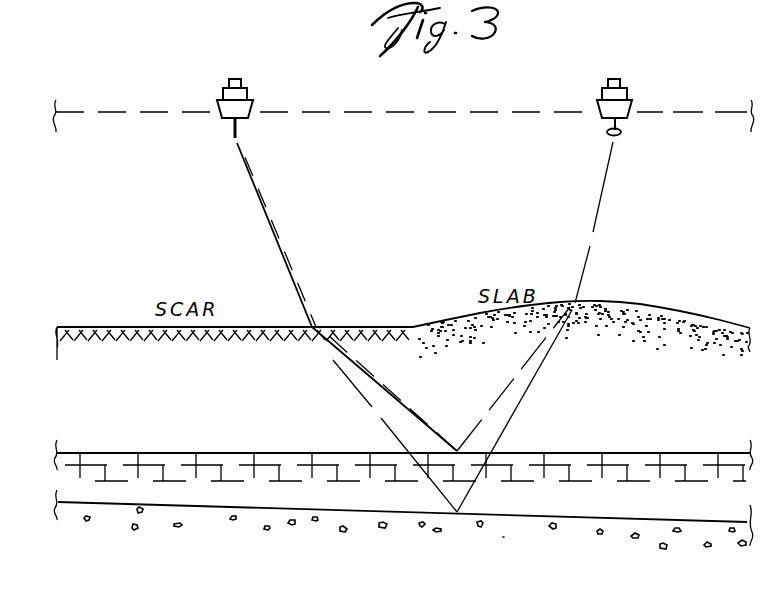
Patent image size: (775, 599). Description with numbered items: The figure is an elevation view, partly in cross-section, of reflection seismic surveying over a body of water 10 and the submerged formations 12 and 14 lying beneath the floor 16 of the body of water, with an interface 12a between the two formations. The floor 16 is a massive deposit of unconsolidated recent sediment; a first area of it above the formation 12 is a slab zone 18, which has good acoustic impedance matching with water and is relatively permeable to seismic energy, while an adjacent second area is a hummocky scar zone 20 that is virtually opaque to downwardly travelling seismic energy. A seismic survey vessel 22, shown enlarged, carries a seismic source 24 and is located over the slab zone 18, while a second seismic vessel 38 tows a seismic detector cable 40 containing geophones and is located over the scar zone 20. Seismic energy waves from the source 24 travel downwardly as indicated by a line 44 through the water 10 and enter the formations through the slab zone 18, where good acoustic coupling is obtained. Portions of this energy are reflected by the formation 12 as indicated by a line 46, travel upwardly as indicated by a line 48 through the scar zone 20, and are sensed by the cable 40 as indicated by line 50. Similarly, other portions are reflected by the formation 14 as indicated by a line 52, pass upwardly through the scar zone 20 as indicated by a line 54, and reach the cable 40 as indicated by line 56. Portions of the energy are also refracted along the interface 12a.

The body of water 10 is at (468, 184).
The submerged formation 12 is at (685, 511).
The interface 12a is at (502, 512).
The submerged formation 14 is at (630, 574).
The floor of the body of water 16 is at (398, 314).
The slab zone 18 is at (625, 367).
The scar zone 20 is at (198, 373).
The seismic survey vessel 22 is at (641, 94).
The seismic source 24 is at (622, 134).
The seismic vessel 38 is at (208, 97).
The seismic detector cable 40 is at (236, 140).
The line 44 is at (593, 228).
The line 46 is at (513, 383).
The line 48 is at (400, 398).
The line 50 is at (262, 202).
The line 52 is at (520, 406).
The line 54 is at (372, 407).
The line 56 is at (284, 270).